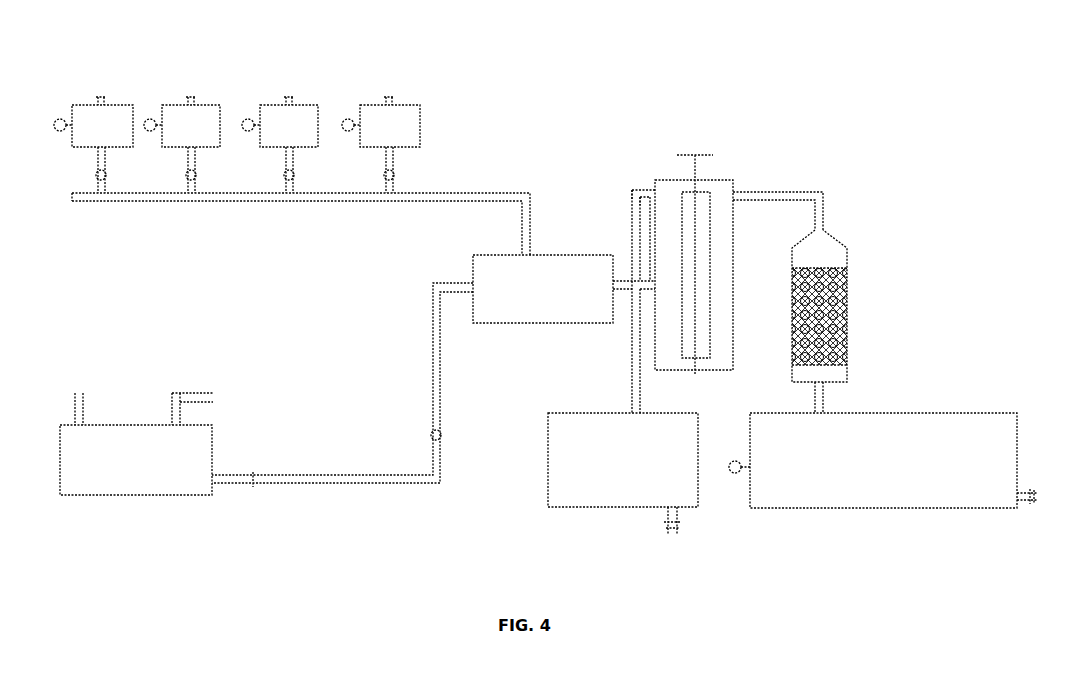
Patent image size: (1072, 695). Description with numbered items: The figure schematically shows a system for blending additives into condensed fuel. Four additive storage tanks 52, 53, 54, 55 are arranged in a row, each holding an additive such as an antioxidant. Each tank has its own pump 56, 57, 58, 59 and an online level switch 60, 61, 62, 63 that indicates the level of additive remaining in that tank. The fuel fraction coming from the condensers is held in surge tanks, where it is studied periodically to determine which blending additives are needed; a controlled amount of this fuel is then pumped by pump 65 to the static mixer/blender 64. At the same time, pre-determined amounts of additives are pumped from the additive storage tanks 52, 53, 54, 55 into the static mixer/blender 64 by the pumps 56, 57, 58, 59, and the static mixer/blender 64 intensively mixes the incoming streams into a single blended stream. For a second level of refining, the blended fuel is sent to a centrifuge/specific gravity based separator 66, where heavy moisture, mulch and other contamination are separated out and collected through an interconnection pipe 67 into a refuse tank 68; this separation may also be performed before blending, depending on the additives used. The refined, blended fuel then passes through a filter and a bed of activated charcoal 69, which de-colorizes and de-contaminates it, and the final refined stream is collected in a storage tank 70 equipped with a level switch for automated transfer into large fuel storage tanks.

The additive storage tank 52 is at (98, 103).
The additive storage tank 53 is at (188, 103).
The additive storage tank 54 is at (286, 103).
The additive storage tank 55 is at (386, 103).
The pump 56 is at (107, 172).
The pump 57 is at (197, 172).
The pump 58 is at (295, 172).
The pump 59 is at (395, 172).
The online level switch 60 is at (60, 119).
The online level switch 61 is at (150, 119).
The online level switch 62 is at (248, 119).
The online level switch 63 is at (348, 119).
The static mixer/blender 64 is at (554, 255).
The pump 65 is at (441, 435).
The centrifuge/specific gravity based separator 66 is at (735, 333).
The interconnection pipe 67 is at (633, 196).
The refuse tank 68 is at (602, 413).
The bed of activated charcoal 69 is at (845, 335).
The storage tank 70 is at (888, 415).